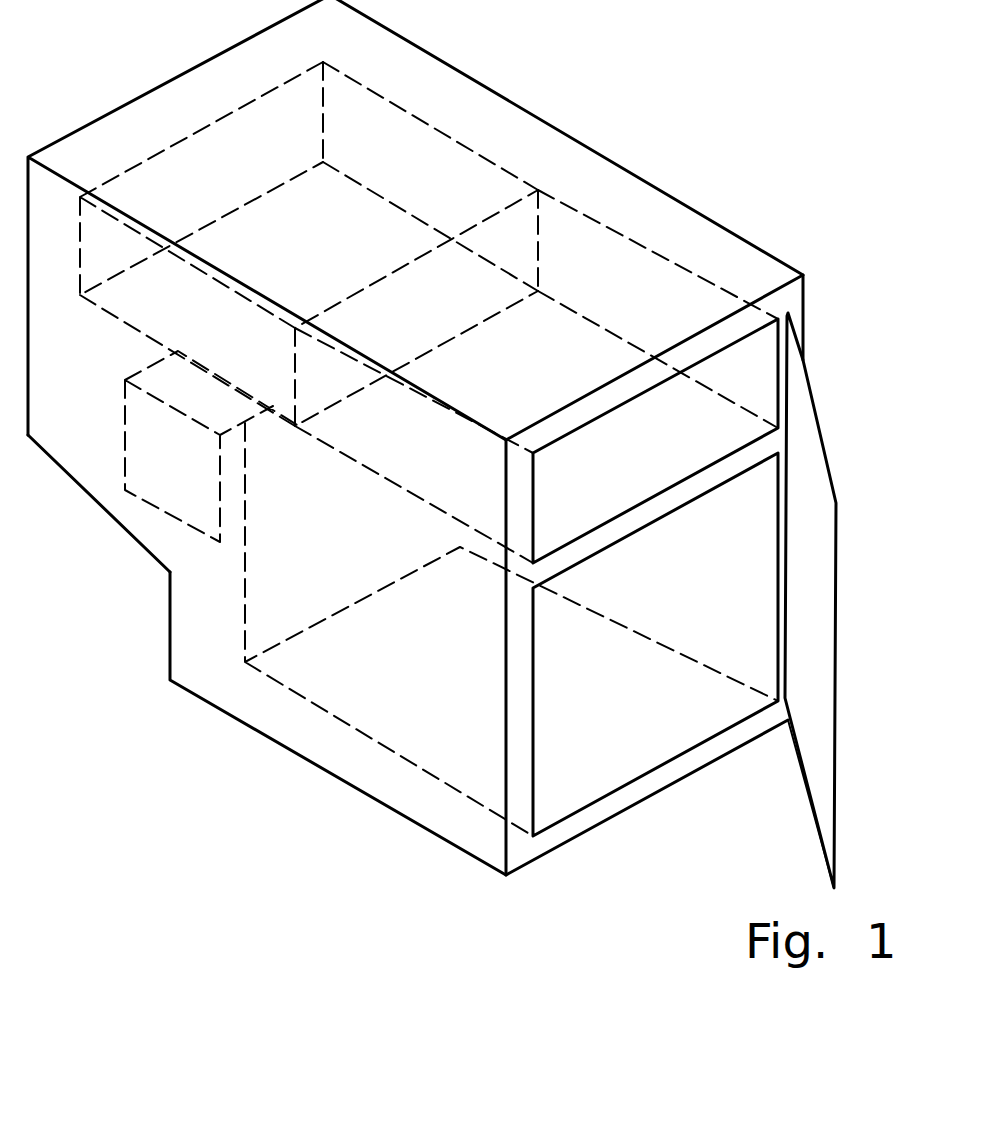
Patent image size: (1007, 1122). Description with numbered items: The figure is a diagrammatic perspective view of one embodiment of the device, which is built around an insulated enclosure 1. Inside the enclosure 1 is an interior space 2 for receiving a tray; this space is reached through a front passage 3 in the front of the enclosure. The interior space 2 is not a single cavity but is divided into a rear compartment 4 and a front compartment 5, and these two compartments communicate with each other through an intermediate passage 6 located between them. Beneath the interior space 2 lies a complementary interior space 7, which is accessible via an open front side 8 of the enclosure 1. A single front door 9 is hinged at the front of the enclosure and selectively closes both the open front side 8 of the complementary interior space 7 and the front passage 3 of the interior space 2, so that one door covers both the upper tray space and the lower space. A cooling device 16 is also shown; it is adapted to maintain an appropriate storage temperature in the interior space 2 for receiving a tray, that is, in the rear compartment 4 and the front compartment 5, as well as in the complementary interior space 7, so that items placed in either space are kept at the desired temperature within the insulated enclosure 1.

The insulated enclosure 1 is at (577, 143).
The interior space 2 is at (743, 363).
The front passage 3 is at (687, 445).
The rear compartment 4 is at (385, 143).
The front compartment 5 is at (605, 263).
The intermediate passage 6 is at (488, 213).
The complementary interior space 7 is at (420, 723).
The open front side 8 is at (562, 788).
The front door 9 is at (815, 787).
The cooling device 16 is at (188, 512).